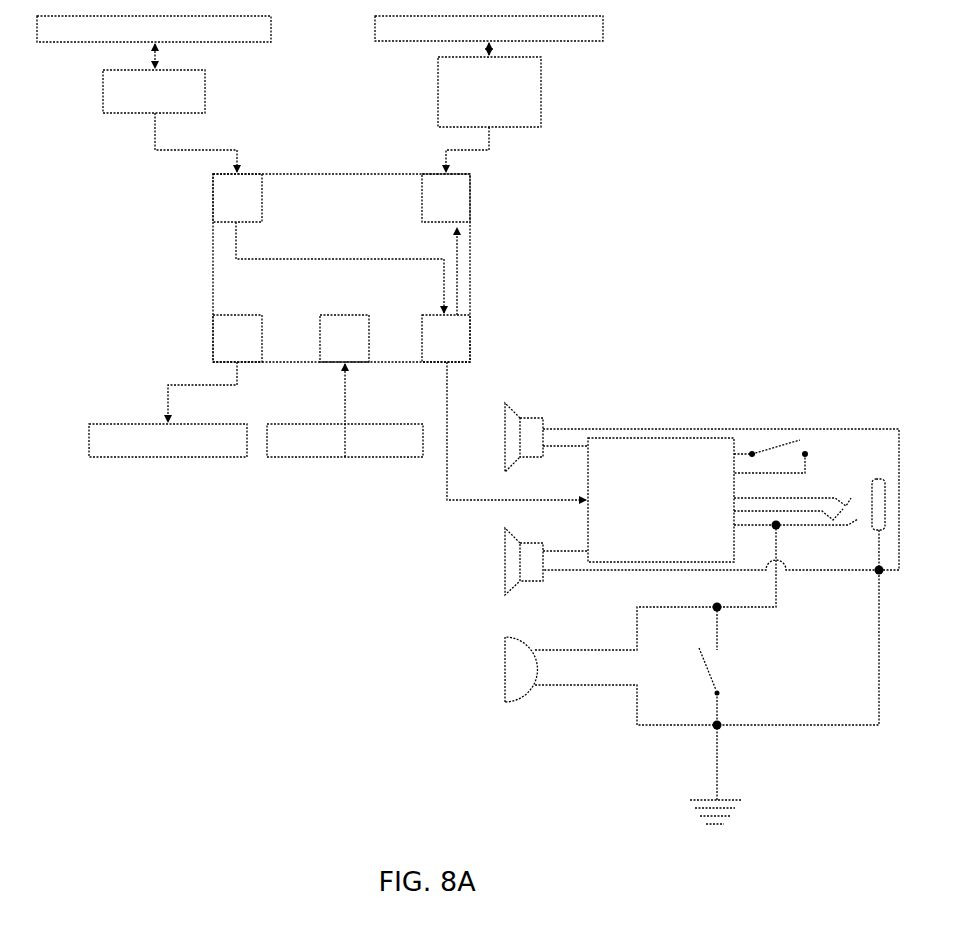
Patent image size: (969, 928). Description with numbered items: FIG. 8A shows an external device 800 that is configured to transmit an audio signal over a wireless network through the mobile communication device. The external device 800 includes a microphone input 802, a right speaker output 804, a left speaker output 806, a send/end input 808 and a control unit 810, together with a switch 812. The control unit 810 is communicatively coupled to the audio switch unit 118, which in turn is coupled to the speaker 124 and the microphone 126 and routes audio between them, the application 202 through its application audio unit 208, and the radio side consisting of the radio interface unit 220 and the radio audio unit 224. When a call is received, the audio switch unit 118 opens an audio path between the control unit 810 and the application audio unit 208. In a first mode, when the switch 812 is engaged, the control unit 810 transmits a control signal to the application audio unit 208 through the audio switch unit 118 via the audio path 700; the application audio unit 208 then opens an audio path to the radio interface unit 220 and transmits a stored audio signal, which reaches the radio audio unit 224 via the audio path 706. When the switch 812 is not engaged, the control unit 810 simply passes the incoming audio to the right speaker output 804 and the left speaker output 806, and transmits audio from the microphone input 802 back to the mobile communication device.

The application 202 is at (275, 31).
The application audio unit 208 is at (209, 98).
The radio interface unit 220 is at (608, 30).
The radio audio unit 224 is at (545, 94).
The audio switch unit 118 is at (210, 271).
The audio path 700 is at (324, 257).
The audio path 706 is at (459, 282).
The speaker 124 is at (156, 459).
The microphone 126 is at (339, 459).
The control unit 810 is at (624, 447).
The switch 812 is at (806, 441).
The right speaker output 804 is at (517, 409).
The left speaker output 806 is at (485, 584).
The microphone input 802 is at (492, 691).
The send/end input 808 is at (701, 673).
The external device 800 is at (499, 791).